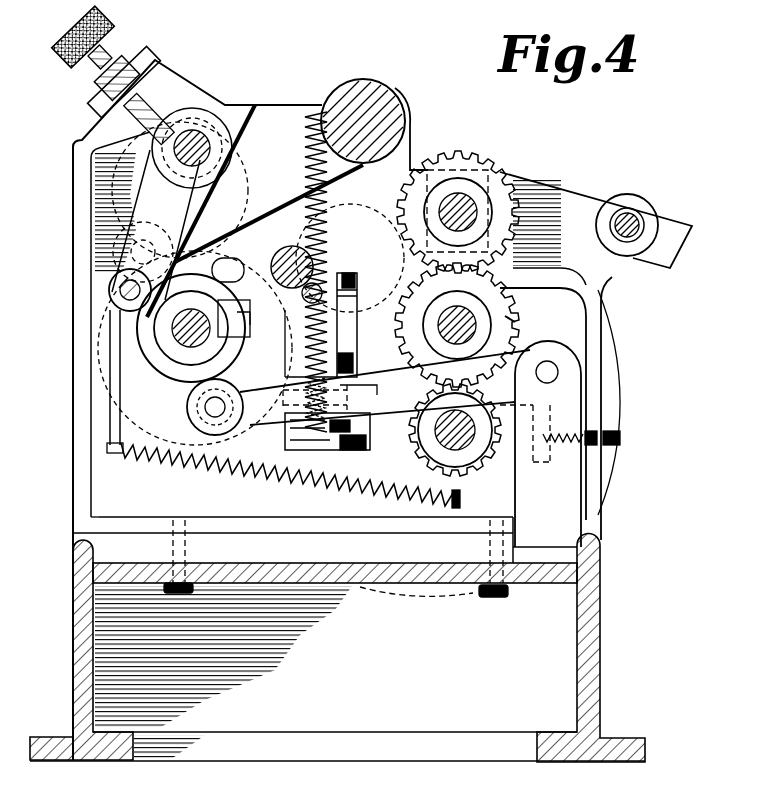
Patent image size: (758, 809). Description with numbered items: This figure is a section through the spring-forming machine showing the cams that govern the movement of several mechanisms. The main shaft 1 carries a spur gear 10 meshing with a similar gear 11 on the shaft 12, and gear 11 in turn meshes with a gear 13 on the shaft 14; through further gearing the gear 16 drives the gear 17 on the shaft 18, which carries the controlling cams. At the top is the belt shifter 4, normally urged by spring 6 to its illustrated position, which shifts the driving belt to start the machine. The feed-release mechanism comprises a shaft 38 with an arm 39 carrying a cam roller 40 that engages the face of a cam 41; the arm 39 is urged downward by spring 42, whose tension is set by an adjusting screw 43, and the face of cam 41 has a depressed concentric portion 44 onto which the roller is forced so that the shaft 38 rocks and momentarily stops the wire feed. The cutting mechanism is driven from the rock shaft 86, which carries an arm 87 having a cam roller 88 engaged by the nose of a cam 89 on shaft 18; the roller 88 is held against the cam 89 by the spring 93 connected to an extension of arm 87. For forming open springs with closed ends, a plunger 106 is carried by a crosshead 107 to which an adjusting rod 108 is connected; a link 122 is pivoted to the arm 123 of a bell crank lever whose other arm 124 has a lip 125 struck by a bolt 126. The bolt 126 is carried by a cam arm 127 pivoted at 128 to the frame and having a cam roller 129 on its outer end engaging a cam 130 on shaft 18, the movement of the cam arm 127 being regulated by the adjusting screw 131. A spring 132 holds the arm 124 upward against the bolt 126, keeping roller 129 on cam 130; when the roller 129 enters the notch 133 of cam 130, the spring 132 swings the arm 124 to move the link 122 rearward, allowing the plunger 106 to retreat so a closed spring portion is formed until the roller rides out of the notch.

The main shaft 1 is at (468, 434).
The belt shifter 4 is at (612, 220).
The spring 6 is at (632, 211).
The spur gear 10 is at (426, 446).
The gear 11 is at (505, 320).
The shaft 12 is at (460, 306).
The gear 13 is at (467, 165).
The shaft 14 is at (467, 195).
The gear 16 is at (374, 244).
The gear 17 is at (168, 425).
The shaft 18 is at (170, 350).
The shaft 38 is at (388, 98).
The arm 39 is at (312, 125).
The cam roller 40 is at (118, 250).
The cam 41 is at (197, 328).
The spring 42 is at (180, 190).
The adjusting screw 43 is at (112, 24).
The depressed concentric portion 44 is at (255, 211).
The rock shaft 86 is at (193, 130).
The arm 87 is at (93, 212).
The cam roller 88 is at (110, 305).
The cam 89 is at (200, 272).
The spring 93 is at (243, 478).
The plunger 106 is at (253, 299).
The crosshead 107 is at (357, 300).
The adjusting rod 108 is at (332, 328).
The link 122 is at (357, 293).
The arm 123 is at (355, 279).
The arm 124 is at (350, 445).
The lip 125 is at (358, 440).
The bolt 126 is at (352, 340).
The cam arm 127 is at (377, 385).
The pivot 128 is at (556, 371).
The cam roller 129 is at (228, 415).
The cam 130 is at (238, 318).
The adjusting screw 131 is at (625, 422).
The spring 132 is at (291, 246).
The notch 133 is at (301, 296).